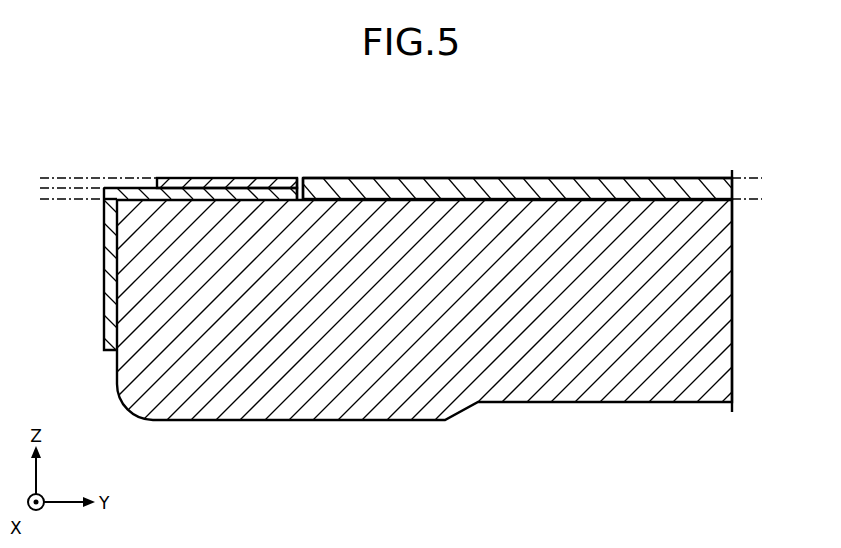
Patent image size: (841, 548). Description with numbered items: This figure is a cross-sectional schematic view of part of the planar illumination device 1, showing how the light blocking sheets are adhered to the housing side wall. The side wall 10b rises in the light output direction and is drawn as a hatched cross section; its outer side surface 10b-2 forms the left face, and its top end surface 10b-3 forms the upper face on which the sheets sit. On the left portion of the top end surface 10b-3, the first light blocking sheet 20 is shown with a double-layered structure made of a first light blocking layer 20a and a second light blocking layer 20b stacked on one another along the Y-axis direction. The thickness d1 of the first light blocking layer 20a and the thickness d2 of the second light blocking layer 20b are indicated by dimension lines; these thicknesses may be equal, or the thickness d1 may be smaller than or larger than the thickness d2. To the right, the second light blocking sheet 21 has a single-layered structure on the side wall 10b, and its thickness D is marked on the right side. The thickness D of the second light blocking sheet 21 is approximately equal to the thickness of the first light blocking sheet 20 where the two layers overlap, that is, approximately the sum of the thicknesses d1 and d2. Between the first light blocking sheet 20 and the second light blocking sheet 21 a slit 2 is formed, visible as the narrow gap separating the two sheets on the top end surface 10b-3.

The planar illumination device 1 is at (694, 156).
The slit 2 is at (298, 170).
The side wall 10b is at (723, 381).
The outer side surface 10b-2 is at (110, 270).
The top end surface 10b-3 is at (112, 194).
The first light blocking sheet 20 is at (157, 132).
The first light blocking layer 20a is at (183, 180).
The second light blocking layer 20b is at (230, 182).
The second light blocking sheet 21 is at (543, 188).
The thickness of the first light blocking layer d1 is at (80, 222).
The thickness of the second light blocking layer d2 is at (80, 155).
The thickness of the second light blocking sheet D is at (768, 178).